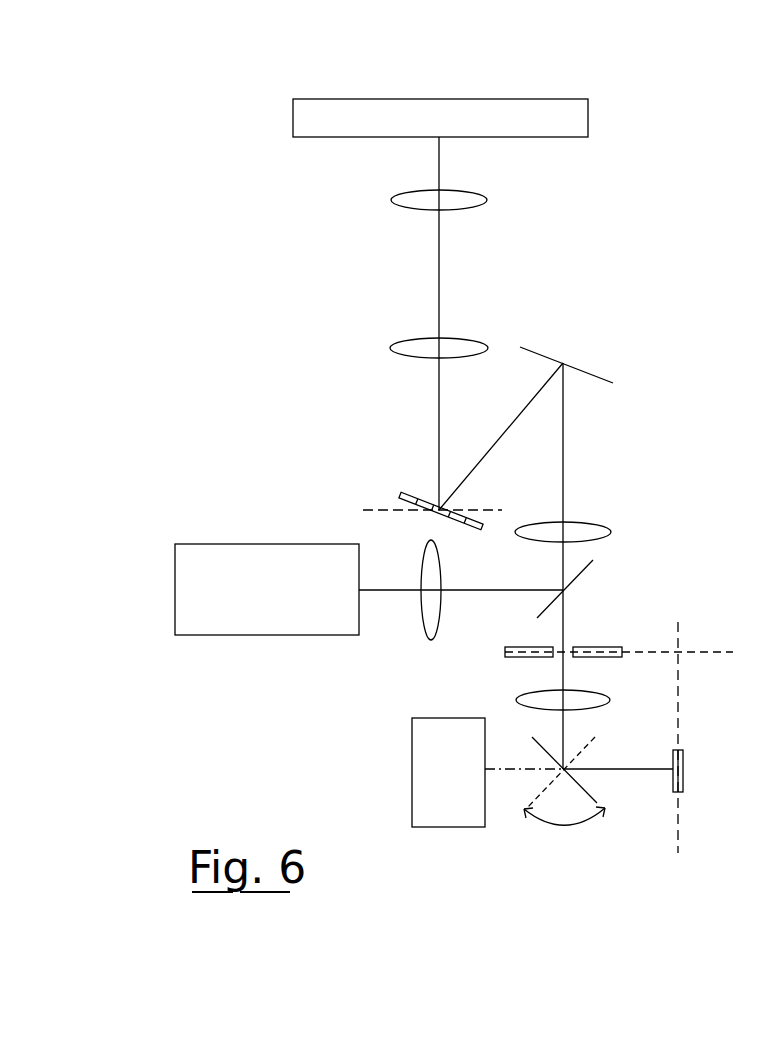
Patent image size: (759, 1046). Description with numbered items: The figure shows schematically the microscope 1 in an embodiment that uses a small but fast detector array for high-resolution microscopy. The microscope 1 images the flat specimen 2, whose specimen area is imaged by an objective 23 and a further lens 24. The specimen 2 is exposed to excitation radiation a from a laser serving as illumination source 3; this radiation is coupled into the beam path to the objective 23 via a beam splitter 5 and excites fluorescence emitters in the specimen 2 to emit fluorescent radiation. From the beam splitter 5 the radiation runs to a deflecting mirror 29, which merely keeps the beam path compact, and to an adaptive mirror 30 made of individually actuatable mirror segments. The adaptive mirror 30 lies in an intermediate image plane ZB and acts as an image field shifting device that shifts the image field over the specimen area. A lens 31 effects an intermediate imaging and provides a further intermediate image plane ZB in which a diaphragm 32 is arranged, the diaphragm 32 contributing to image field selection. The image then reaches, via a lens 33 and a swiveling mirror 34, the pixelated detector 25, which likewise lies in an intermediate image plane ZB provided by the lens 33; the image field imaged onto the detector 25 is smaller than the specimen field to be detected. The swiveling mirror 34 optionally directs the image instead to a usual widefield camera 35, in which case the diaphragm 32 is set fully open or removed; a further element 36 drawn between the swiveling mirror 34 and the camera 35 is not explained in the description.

The microscope 1 is at (644, 344).
The specimen 2 is at (584, 117).
The illumination source 3 is at (283, 627).
The beam splitter 5 is at (590, 574).
The objective 23 is at (405, 204).
The further lens 24 is at (407, 352).
The detector 25 is at (683, 785).
The deflecting mirror 29 is at (585, 371).
The adaptive mirror 30 is at (405, 490).
The lens 31 is at (598, 522).
The diaphragm 32 is at (612, 645).
The lens 33 is at (523, 702).
The swiveling mirror 34 is at (590, 788).
The widefield camera 35 is at (440, 820).
The optical path to detector 36 is at (505, 772).
The excitation radiation a is at (388, 593).
The intermediate image plane ZB is at (380, 510).